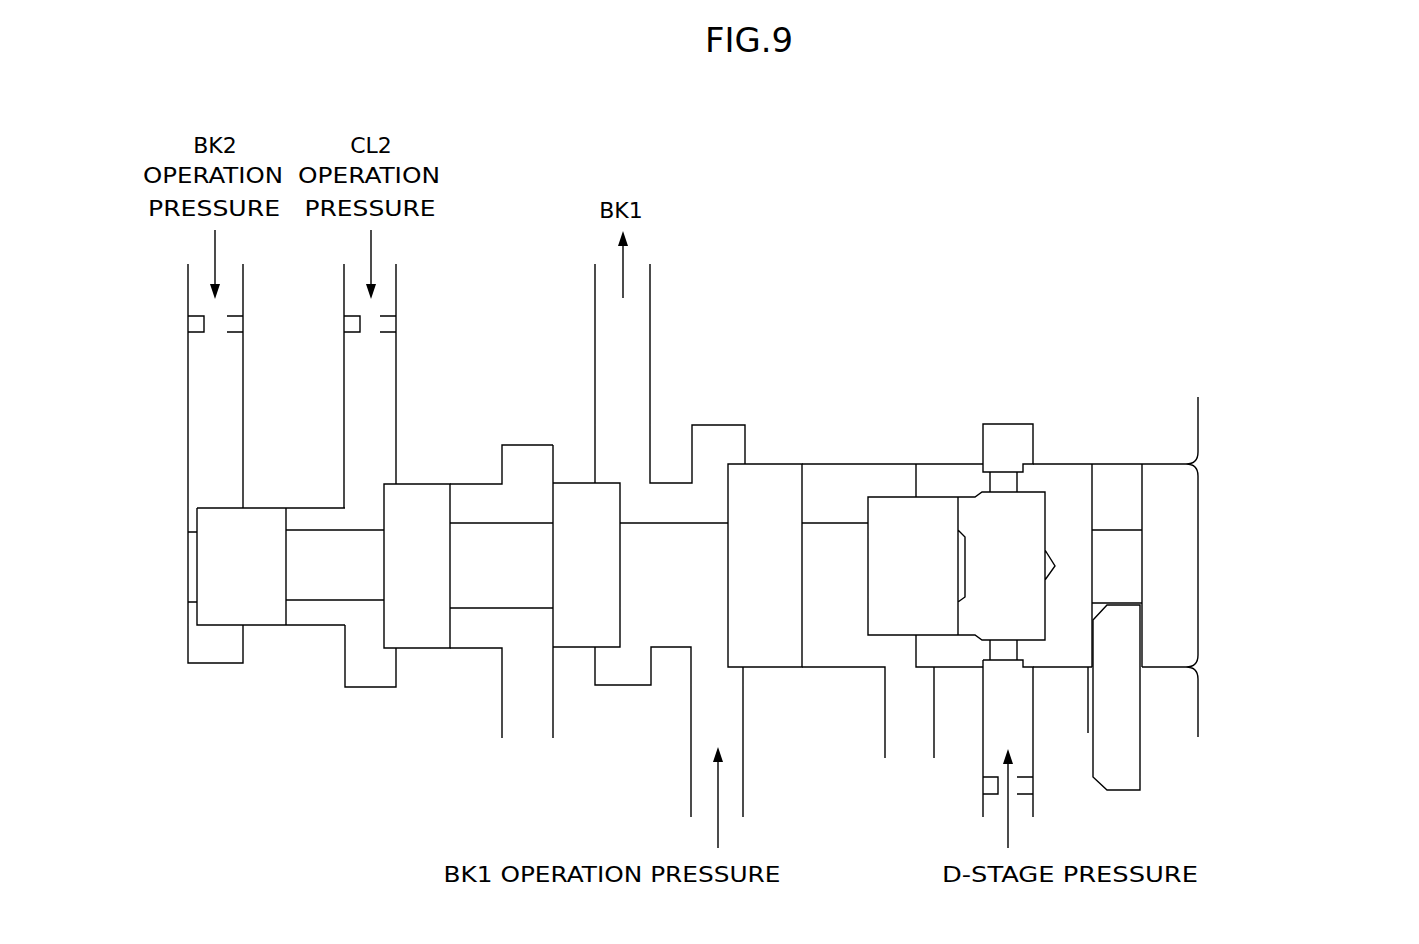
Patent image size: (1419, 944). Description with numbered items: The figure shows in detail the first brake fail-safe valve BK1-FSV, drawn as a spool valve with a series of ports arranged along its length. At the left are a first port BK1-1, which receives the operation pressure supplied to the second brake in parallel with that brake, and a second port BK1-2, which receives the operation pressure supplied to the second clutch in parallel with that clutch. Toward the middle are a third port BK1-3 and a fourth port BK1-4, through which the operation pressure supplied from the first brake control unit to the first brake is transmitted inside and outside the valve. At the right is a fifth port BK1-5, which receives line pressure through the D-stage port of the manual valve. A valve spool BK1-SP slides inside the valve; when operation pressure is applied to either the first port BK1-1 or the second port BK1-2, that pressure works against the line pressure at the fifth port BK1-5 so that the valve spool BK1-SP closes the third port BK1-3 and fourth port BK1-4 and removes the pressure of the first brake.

The first port BK1-1 is at (195, 418).
The second port BK1-2 is at (397, 417).
The third port BK1-3 is at (718, 710).
The fourth port BK1-4 is at (630, 392).
The fifth port BK1-5 is at (1007, 710).
The valve spool BK1-SP is at (768, 480).
The first brake fail-safe valve BK1-FSV is at (1220, 552).